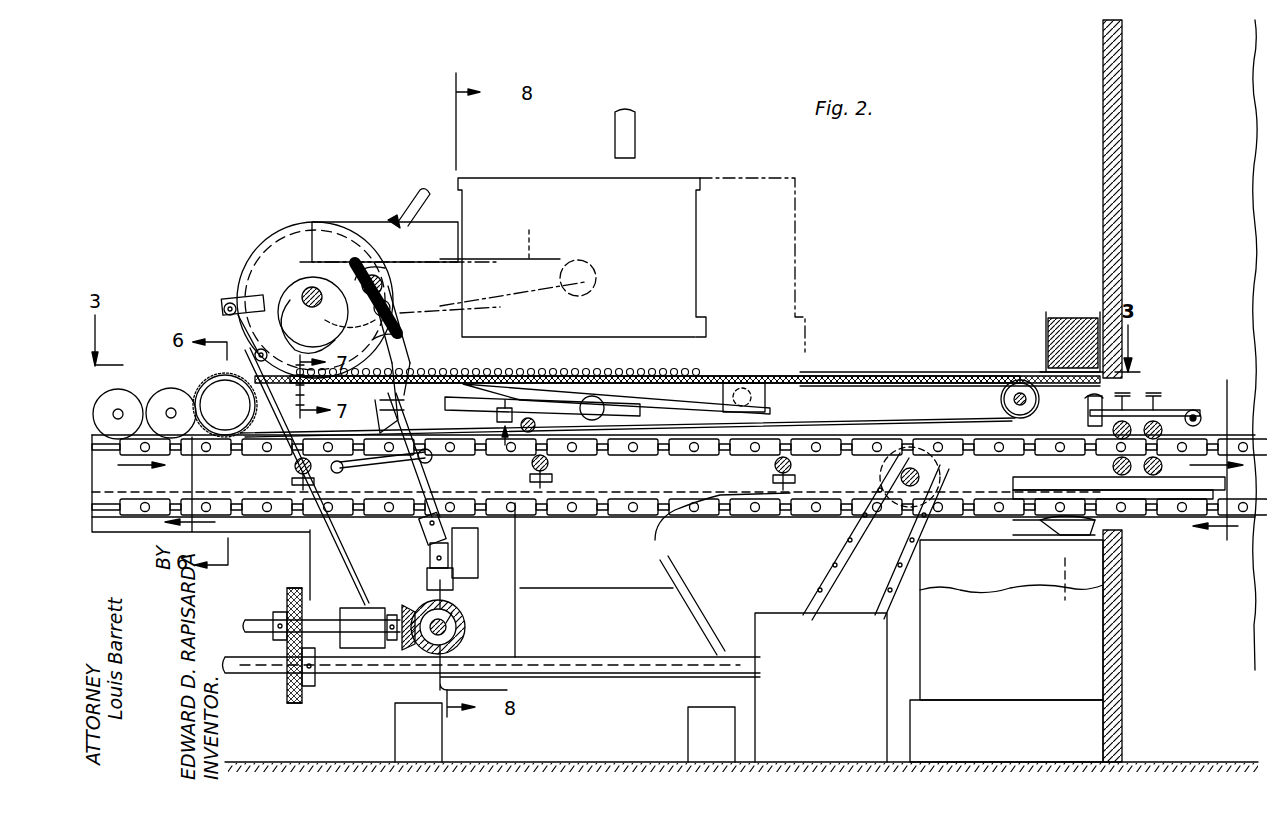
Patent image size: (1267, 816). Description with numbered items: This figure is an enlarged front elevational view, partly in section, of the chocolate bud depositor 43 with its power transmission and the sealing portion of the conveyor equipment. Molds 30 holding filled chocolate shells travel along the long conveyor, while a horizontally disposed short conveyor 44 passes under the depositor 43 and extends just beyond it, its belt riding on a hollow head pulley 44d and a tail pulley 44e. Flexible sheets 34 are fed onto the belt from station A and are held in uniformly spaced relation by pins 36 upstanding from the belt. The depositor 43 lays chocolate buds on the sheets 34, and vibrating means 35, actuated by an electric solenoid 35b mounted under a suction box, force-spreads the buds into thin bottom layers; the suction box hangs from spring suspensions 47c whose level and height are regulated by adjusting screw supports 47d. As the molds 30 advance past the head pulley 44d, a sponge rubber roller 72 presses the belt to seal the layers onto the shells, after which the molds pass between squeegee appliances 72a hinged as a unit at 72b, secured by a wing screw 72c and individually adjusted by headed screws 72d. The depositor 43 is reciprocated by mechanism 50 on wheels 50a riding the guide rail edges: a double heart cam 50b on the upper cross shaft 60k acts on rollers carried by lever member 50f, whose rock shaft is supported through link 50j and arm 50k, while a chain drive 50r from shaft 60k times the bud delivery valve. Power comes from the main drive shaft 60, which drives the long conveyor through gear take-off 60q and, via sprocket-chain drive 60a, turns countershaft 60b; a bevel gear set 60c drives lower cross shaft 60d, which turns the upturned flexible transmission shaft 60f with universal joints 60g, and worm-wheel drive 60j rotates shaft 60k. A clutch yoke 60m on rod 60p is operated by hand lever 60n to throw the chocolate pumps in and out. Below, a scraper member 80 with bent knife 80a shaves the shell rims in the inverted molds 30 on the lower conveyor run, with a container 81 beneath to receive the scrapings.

The mold 30 is at (624, 514).
The flexible sheet 34 is at (928, 375).
The vibrating means 35 is at (508, 452).
The electric solenoid 35b is at (545, 375).
The pin 36 is at (818, 375).
The chocolate bud depositor 43 is at (665, 198).
The short conveyor 44 is at (260, 398).
The hollow head pulley 44d is at (228, 415).
The tail pulley 44e is at (1030, 405).
The spring suspension 47c is at (402, 368).
The adjusting screw support 47d is at (292, 480).
The depositor reciprocating mechanism 50 is at (352, 210).
The wheel 50a is at (612, 385).
The double heart cam 50b is at (353, 278).
The lever member 50f is at (398, 330).
The link 50j is at (440, 305).
The arm 50k is at (398, 458).
The chain drive 50r is at (529, 231).
The main drive shaft 60 is at (600, 660).
The sprocket-chain drive 60a is at (287, 595).
The countershaft 60b is at (335, 635).
The bevel gear set 60c is at (410, 600).
The lower cross shaft 60d is at (464, 608).
The flexible transmission shaft 60f is at (495, 409).
The universal joint 60g is at (425, 543).
The worm-wheel drive 60j is at (261, 248).
The upper cross shaft 60k is at (309, 292).
The clutch yoke 60m is at (260, 275).
The hand lever 60n is at (413, 188).
The rod 60p is at (225, 305).
The gear take-off 60q is at (792, 578).
The sponge rubber roller 72 is at (225, 405).
The squeegee appliance 72a is at (1132, 413).
The hinge 72b is at (1200, 416).
The wing screw 72c is at (1122, 387).
The headed screw 72d is at (1155, 396).
The scraper member 80 is at (1080, 535).
The bent knife 80a is at (1055, 535).
The container 81 is at (1006, 651).
The station A is at (1066, 307).